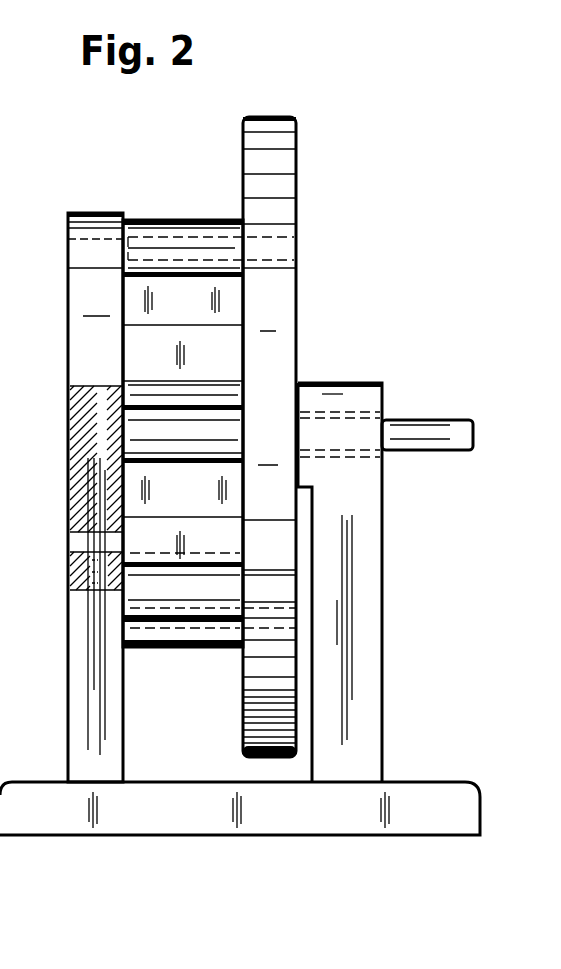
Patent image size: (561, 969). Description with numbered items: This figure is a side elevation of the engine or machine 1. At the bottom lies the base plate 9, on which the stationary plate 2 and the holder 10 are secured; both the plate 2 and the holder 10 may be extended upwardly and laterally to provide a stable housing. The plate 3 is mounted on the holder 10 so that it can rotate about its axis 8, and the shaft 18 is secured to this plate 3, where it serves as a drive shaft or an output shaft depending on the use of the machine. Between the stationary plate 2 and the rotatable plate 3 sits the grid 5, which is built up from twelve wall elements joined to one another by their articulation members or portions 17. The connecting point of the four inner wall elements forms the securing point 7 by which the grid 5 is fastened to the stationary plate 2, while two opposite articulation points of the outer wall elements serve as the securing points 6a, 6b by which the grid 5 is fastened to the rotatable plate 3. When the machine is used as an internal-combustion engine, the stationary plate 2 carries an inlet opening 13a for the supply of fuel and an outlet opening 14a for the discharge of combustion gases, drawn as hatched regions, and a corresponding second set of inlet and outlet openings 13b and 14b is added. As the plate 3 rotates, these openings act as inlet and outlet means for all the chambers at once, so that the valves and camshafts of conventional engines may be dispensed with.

The engine or machine 1 is at (309, 320).
The stationary plate 2 is at (95, 250).
The plate 3 is at (277, 163).
The grid 5 is at (152, 209).
The securing point 6a is at (297, 245).
The securing point 6b is at (297, 619).
The securing point 7 is at (80, 560).
The axis 8 is at (437, 424).
The shaft 18 is at (420, 432).
The base plate 9 is at (340, 810).
The holder 10 is at (355, 535).
The inlet opening 13a is at (98, 449).
The outlet opening 14a is at (66, 459).
The inlet opening 13b is at (75, 590).
The outlet opening 14b is at (63, 615).
The articulation portion 17 is at (200, 228).